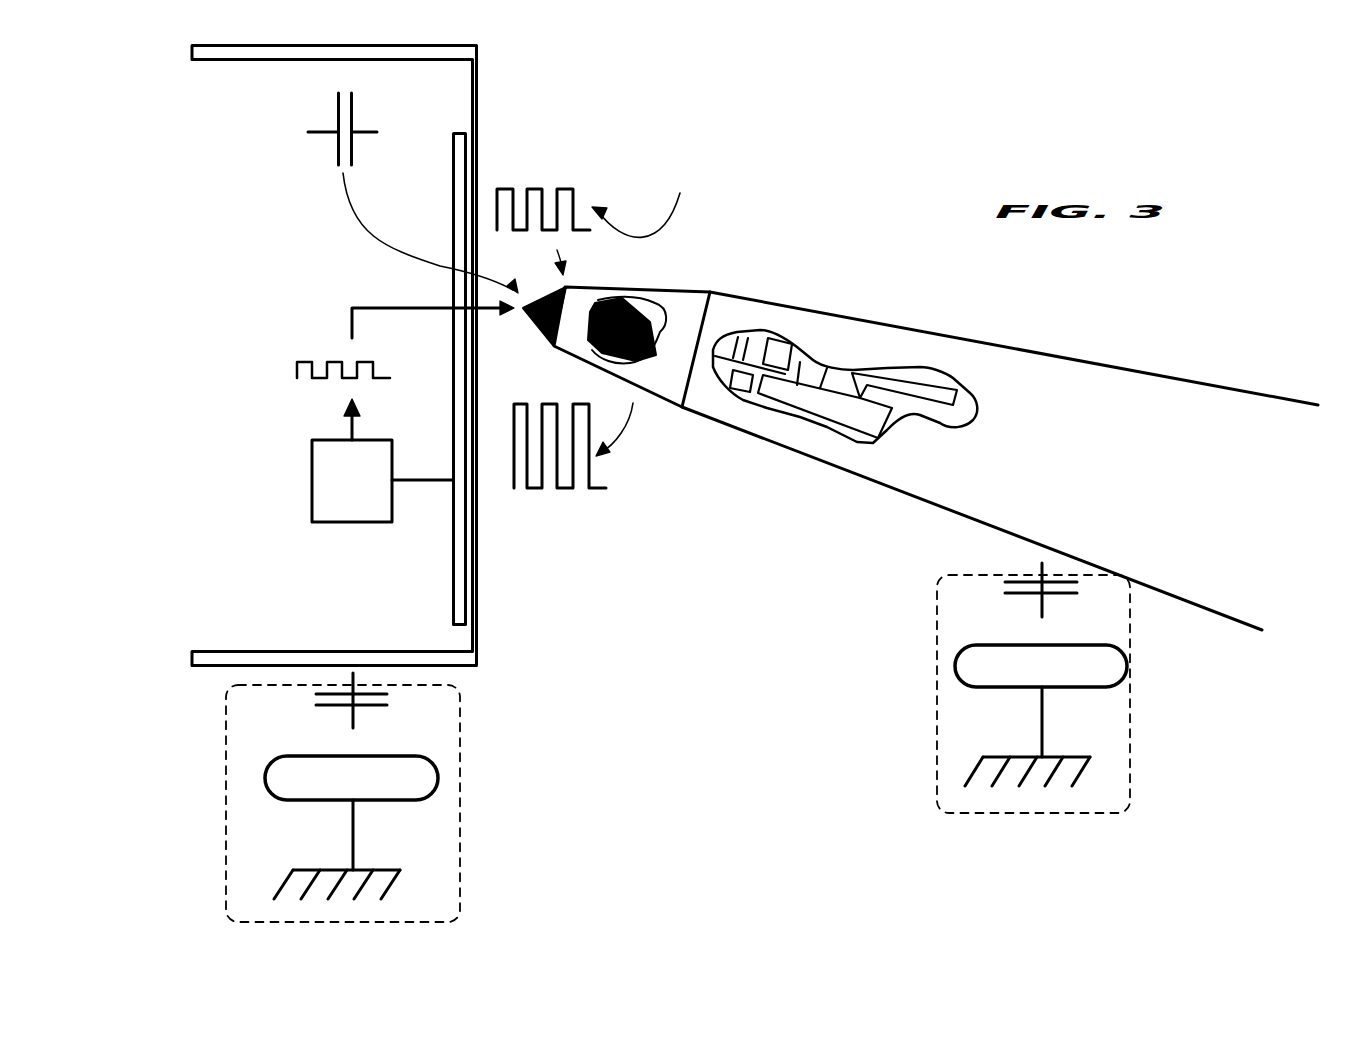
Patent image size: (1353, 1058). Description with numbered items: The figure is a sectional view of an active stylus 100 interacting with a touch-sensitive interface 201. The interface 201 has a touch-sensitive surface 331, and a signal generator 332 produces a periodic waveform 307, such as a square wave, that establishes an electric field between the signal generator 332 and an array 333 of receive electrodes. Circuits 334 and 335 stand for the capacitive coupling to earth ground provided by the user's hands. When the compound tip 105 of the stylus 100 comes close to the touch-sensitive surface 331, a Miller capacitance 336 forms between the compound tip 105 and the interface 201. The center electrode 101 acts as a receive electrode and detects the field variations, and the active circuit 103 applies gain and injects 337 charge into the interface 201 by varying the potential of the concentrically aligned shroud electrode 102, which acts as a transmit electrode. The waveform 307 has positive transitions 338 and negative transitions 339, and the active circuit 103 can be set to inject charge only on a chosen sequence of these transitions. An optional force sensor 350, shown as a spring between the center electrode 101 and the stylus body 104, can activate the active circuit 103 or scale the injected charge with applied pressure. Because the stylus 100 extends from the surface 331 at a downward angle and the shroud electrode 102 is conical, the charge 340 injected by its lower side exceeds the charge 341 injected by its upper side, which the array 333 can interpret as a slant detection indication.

The stylus 100 is at (910, 422).
The center electrode 101 is at (533, 320).
The shroud electrode 102 is at (675, 303).
The active circuit 103 is at (823, 427).
The stylus body 104 is at (1075, 385).
The compound tip 105 is at (544, 257).
The touch-sensitive interface 201 is at (374, 356).
The periodic waveform 307 is at (308, 365).
The touch-sensitive surface 331 is at (478, 575).
The signal generator 332 is at (337, 480).
The array of receive electrodes 333 is at (460, 543).
The circuit 334 is at (937, 645).
The circuit 335 is at (460, 807).
The Miller capacitance 336 is at (316, 147).
The charge injection 337 is at (645, 203).
The positive transitions 338 is at (297, 372).
The negative transitions 339 is at (313, 370).
The charge injected by lower side 340 is at (553, 490).
The charge injected by upper side 341 is at (536, 186).
The force sensor 350 is at (657, 335).